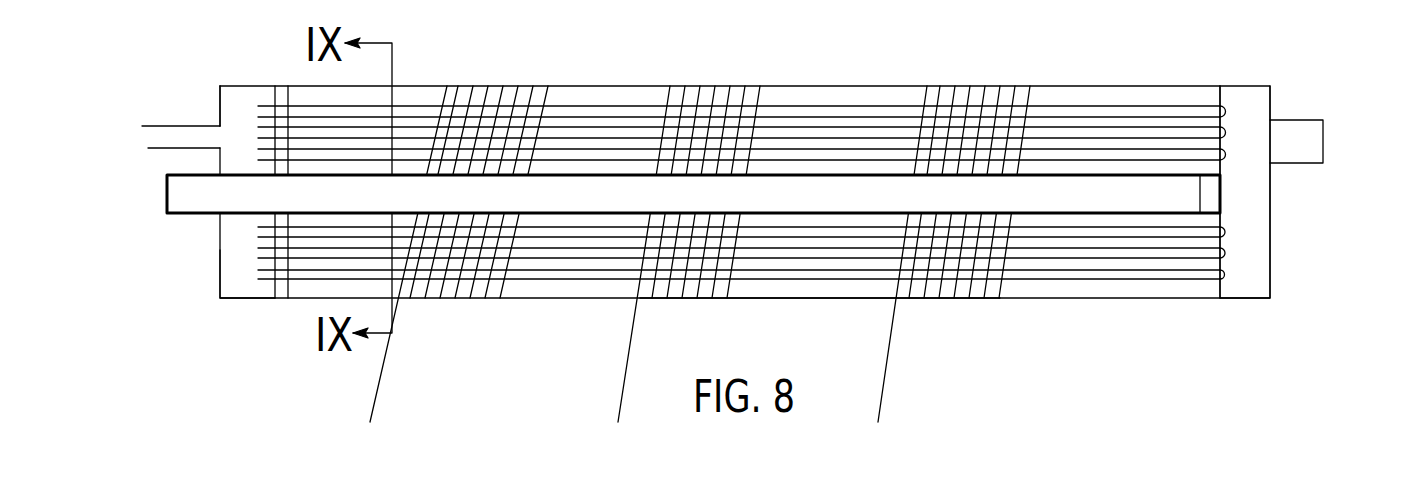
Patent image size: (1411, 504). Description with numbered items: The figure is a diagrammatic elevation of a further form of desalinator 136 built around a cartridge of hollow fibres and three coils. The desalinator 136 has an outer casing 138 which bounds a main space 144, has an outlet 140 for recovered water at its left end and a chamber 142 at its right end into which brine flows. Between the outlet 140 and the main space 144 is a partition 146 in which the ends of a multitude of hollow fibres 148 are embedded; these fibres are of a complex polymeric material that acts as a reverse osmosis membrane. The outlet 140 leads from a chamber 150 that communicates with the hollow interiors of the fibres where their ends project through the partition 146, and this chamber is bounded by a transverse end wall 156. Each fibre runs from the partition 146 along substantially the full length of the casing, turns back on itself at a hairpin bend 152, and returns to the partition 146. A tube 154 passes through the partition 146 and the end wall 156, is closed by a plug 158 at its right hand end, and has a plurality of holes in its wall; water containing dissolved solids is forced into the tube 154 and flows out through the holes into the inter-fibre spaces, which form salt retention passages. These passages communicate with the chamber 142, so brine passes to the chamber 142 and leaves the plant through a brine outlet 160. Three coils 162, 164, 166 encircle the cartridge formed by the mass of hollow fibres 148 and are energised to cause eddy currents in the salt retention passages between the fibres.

The desalinator 136 is at (610, 70).
The outer casing 138 is at (1057, 86).
The outlet 140 is at (152, 125).
The chamber 142 is at (1250, 282).
The main space 144 is at (805, 288).
The partition 146 is at (268, 292).
The hollow fibres 148 is at (830, 128).
The chamber 150 is at (243, 247).
The hairpin bend 152 is at (1224, 232).
The tube 154 is at (197, 192).
The transverse end wall 156 is at (263, 40).
The plug 158 is at (1208, 192).
The brine outlet 160 is at (1312, 119).
The coil 162 is at (503, 86).
The coil 164 is at (747, 85).
The coil 166 is at (973, 86).